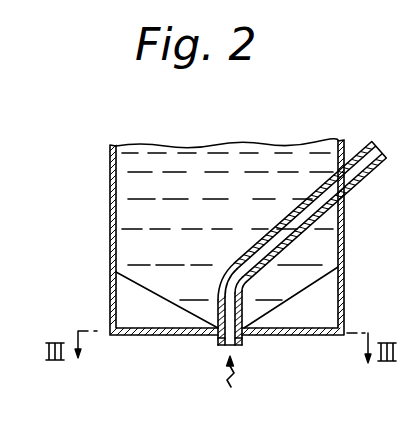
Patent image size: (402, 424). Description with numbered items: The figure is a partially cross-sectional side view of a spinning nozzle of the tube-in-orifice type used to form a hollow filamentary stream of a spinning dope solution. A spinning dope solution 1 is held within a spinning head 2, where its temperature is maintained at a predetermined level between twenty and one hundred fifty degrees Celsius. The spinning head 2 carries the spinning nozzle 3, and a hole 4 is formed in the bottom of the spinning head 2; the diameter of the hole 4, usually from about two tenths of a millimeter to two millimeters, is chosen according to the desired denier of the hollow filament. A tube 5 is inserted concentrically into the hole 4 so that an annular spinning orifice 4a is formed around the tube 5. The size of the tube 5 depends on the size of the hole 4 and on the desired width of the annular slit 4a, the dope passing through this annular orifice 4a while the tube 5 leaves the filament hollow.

The spinning dope solution 1 is at (124, 240).
The spinning head 2 is at (111, 186).
The spinning nozzle 3 is at (232, 412).
The hole 4 is at (244, 340).
The annular spinning orifice 4a is at (217, 341).
The tube 5 is at (245, 292).